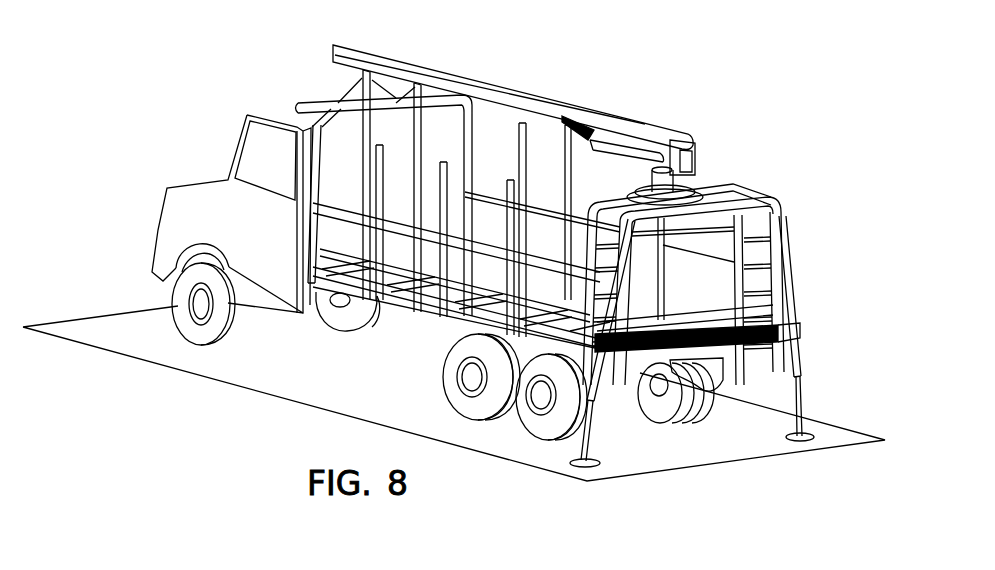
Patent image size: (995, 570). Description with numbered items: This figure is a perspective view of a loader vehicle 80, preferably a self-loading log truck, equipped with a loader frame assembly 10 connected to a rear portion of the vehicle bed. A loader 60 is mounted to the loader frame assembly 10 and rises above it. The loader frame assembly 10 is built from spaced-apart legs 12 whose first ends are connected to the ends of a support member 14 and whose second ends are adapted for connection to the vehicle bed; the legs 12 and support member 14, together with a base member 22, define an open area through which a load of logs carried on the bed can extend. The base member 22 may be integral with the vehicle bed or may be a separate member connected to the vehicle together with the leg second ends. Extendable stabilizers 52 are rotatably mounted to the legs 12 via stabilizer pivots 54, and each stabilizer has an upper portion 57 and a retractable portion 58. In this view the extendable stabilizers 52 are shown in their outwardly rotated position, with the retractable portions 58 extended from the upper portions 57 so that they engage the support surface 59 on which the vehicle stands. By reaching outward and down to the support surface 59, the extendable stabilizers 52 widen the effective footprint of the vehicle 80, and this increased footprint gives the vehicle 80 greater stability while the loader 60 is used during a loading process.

The loader vehicle 80 is at (213, 132).
The loader 60 is at (708, 135).
The loader frame assembly 10 is at (678, 309).
The support member 14 is at (745, 197).
The stabilizer pivots 54 is at (773, 265).
The legs 12 is at (737, 307).
The base member 22 is at (739, 347).
The upper portions 57 is at (792, 334).
The extendable stabilizers 52 is at (816, 399).
The retractable portions 58 is at (596, 456).
The support surface 59 is at (331, 385).